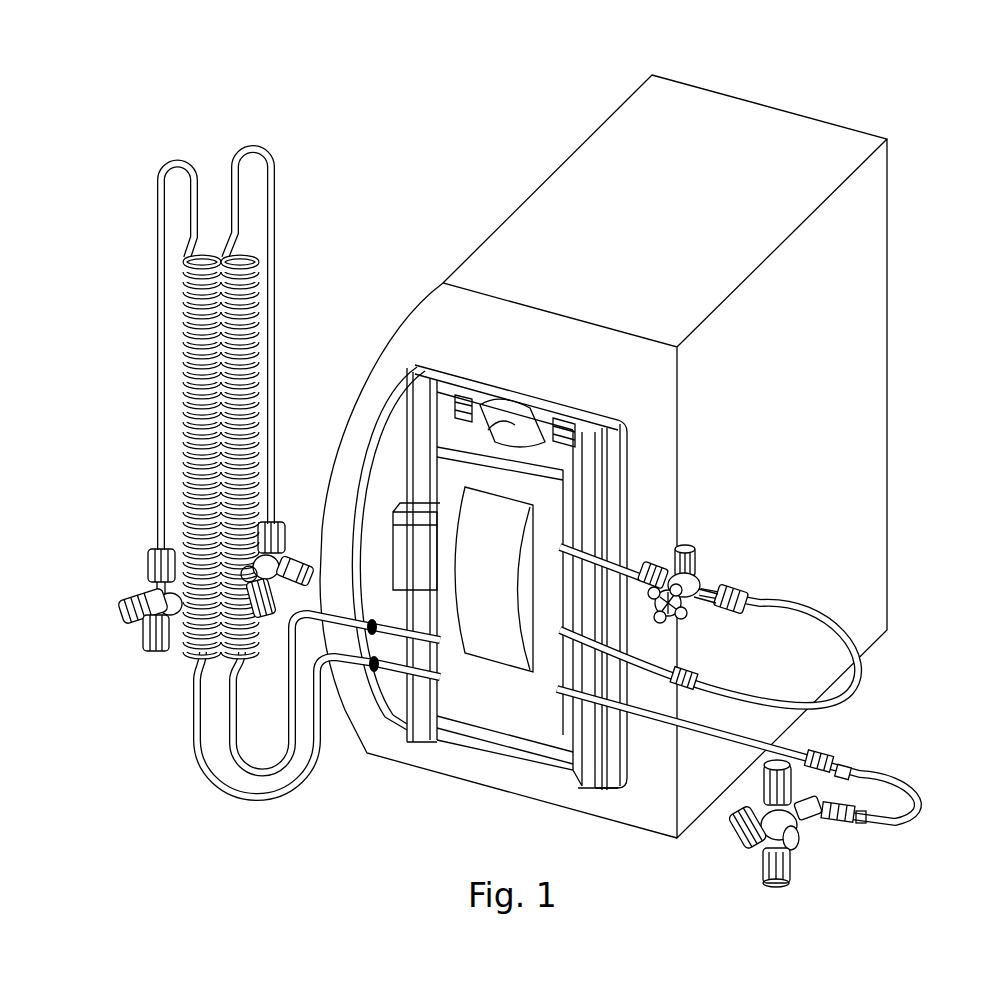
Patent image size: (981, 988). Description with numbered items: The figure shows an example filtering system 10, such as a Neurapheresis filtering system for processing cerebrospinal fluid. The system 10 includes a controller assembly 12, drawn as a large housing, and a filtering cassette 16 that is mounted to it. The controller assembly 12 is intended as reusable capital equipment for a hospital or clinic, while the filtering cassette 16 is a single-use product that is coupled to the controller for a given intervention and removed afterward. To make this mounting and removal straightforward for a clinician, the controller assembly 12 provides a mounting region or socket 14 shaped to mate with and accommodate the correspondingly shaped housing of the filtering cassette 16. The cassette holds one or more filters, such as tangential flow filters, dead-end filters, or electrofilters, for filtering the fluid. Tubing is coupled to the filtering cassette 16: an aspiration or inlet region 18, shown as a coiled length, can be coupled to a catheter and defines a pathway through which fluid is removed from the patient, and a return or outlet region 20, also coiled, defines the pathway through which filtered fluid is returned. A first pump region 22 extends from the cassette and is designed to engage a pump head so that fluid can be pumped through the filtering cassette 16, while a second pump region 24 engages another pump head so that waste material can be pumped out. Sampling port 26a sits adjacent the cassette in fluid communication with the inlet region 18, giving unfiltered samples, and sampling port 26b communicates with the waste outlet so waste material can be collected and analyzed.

The filtering system 10 is at (280, 80).
The controller assembly 12 is at (764, 118).
The socket 14 is at (645, 445).
The filtering cassette 16 is at (486, 690).
The inlet region 18 is at (140, 363).
The return region 20 is at (300, 216).
The first pump region 22 is at (905, 683).
The second pump region 24 is at (905, 790).
The sampling port 26a is at (718, 566).
The sampling port 26b is at (812, 852).